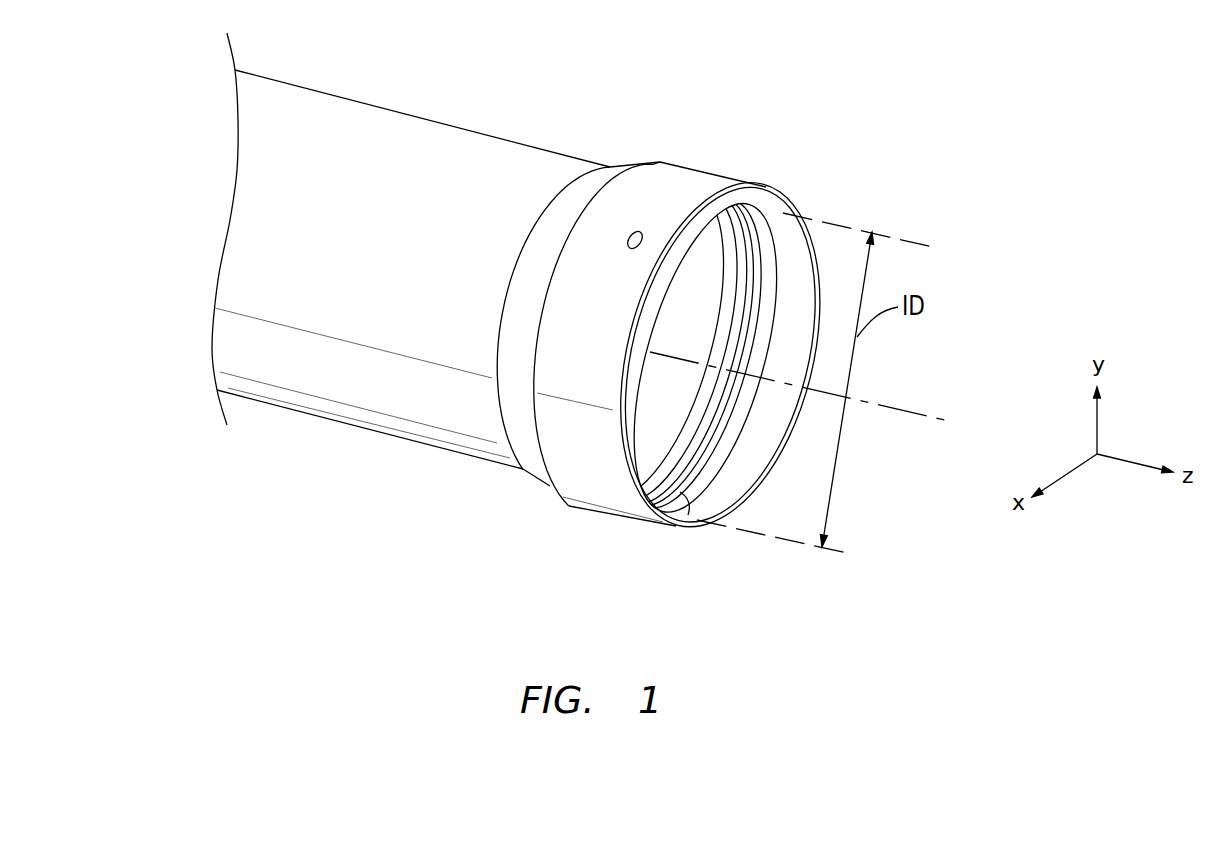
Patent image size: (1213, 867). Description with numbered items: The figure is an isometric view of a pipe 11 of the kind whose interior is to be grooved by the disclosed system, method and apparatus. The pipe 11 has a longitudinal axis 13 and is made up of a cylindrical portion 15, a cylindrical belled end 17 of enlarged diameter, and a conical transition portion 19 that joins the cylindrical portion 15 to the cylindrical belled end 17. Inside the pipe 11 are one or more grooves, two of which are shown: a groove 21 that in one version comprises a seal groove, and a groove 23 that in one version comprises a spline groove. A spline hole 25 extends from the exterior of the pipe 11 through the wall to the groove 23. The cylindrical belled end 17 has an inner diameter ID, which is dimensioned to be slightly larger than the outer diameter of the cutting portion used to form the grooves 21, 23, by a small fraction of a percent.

The pipe 11 is at (852, 146).
The axis 13 is at (917, 412).
The cylindrical portion 15 is at (418, 133).
The cylindrical belled end 17 is at (712, 183).
The conical transition portion 19 is at (607, 177).
The groove 21 is at (668, 476).
The groove 23 is at (688, 513).
The spline hole 25 is at (634, 231).